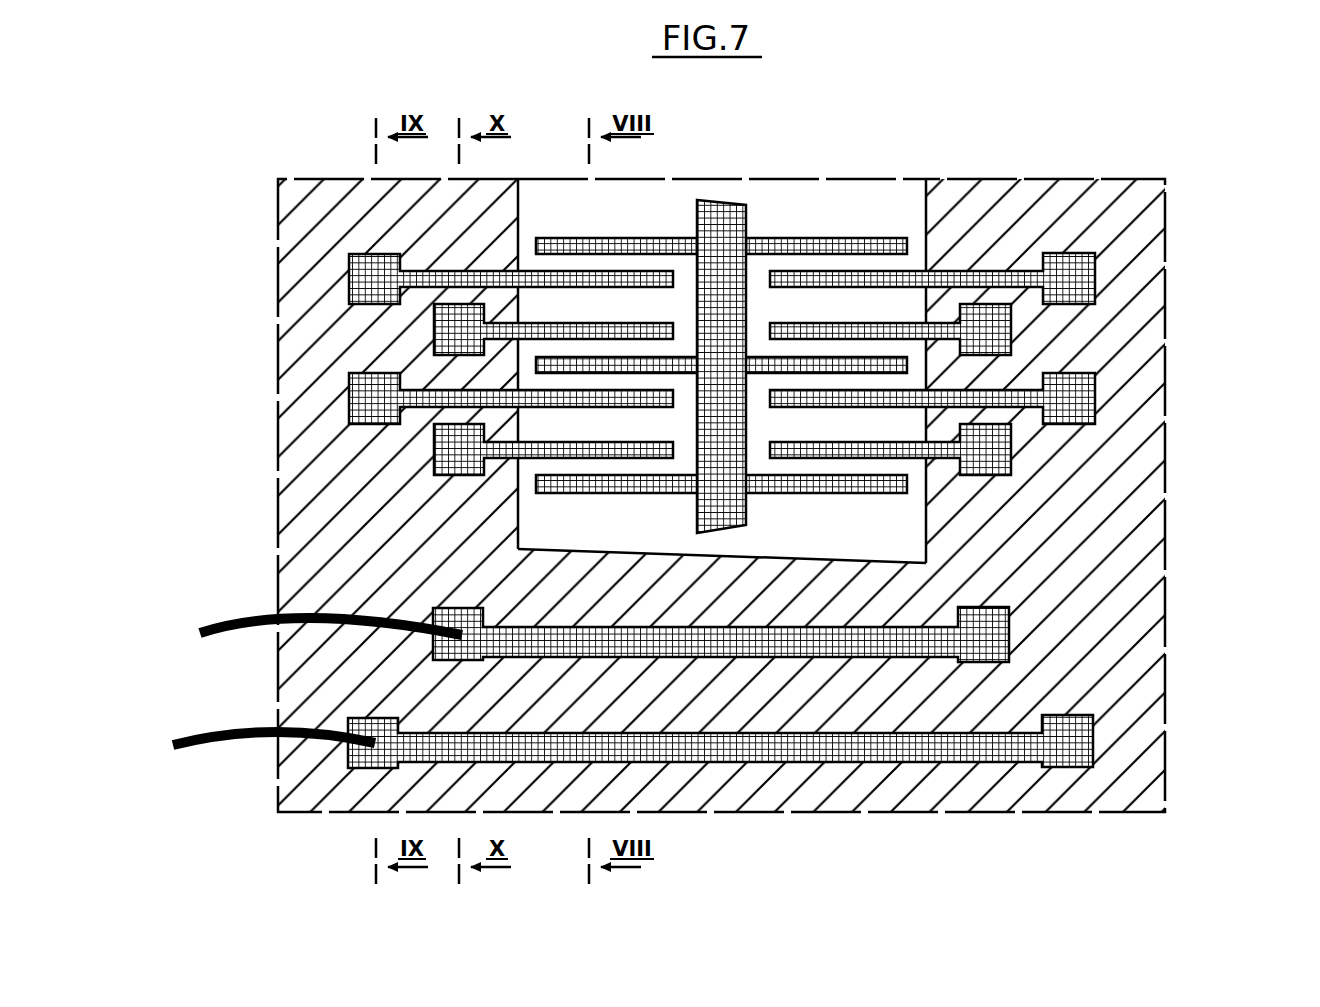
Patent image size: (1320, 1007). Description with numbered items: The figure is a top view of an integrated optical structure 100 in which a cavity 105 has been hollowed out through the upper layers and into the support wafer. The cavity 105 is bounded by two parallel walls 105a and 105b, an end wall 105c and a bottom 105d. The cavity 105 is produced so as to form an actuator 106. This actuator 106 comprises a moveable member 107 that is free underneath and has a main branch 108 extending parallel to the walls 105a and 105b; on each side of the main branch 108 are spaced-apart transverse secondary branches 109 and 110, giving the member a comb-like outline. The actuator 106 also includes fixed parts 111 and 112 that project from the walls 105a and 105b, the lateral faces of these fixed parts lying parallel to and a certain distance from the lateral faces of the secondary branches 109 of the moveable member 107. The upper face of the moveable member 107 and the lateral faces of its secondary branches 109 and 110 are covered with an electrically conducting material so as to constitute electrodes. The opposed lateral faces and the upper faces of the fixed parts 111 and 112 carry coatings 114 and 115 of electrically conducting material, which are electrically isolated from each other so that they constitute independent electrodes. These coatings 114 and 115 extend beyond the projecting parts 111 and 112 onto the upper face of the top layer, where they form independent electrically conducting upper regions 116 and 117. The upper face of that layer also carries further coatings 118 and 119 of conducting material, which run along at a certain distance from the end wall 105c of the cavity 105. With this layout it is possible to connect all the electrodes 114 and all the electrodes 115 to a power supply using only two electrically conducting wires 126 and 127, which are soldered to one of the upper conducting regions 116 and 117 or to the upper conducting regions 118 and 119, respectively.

The integrated optical structure 100 is at (1196, 191).
The cavity 105 is at (813, 522).
The parallel wall 105a is at (526, 524).
The parallel wall 105b is at (934, 218).
The end wall 105c is at (880, 560).
The bottom 105d is at (888, 517).
The actuator 106 is at (783, 211).
The moveable member 107 is at (658, 234).
The main branch 108 is at (742, 208).
The secondary branches 109 is at (563, 237).
The secondary branches 110 is at (855, 240).
The fixed part 111 is at (702, 248).
The fixed part 112 is at (873, 307).
The coating 114 is at (1058, 253).
The coating 115 is at (964, 304).
The upper conducting region 116 is at (349, 279).
The upper conducting region 117 is at (434, 338).
The coating 118 is at (815, 750).
The coating 119 is at (729, 665).
The electrically conducting wire 126 is at (203, 747).
The electrically conducting wire 127 is at (222, 637).